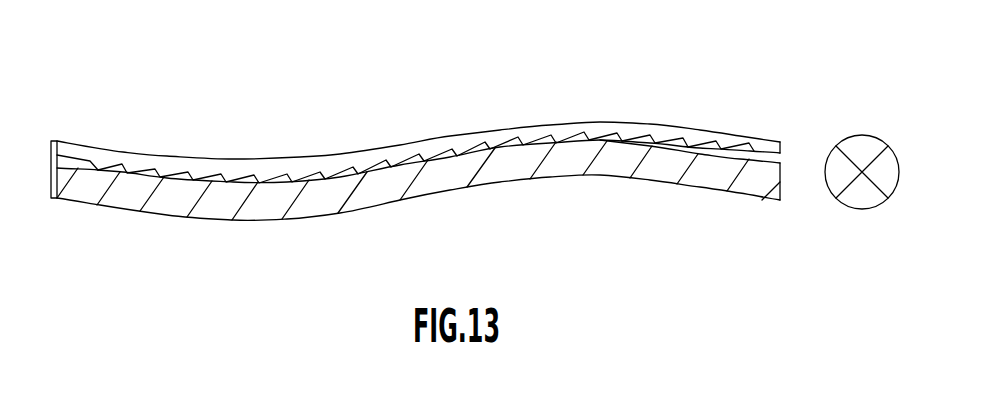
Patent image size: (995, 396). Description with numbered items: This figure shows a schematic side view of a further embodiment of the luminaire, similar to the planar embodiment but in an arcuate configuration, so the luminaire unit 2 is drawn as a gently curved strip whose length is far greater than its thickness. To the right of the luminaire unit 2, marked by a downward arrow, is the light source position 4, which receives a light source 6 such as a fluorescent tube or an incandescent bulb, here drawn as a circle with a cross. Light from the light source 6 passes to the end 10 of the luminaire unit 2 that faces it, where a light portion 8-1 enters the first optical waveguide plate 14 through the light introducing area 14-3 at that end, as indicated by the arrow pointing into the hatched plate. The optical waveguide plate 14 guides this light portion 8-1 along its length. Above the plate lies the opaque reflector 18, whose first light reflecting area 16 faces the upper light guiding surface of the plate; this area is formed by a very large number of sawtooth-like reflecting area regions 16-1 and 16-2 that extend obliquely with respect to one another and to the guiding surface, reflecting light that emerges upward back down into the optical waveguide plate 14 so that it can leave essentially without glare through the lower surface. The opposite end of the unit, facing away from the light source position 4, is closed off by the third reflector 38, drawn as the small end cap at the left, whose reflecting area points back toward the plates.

The luminaire unit 2 is at (435, 93).
The light source position 4 is at (857, 106).
The light source 6 is at (892, 150).
The light portion 8-1 is at (796, 180).
The end 10 is at (778, 140).
The first optical waveguide plate 14 is at (159, 203).
The light introducing area 14-3 is at (782, 190).
The first light reflecting area 16 is at (247, 184).
The reflecting area region 16-1 is at (680, 143).
The reflecting area region 16-2 is at (645, 148).
The opaque reflector 18 is at (272, 168).
The third reflector 38 is at (57, 142).